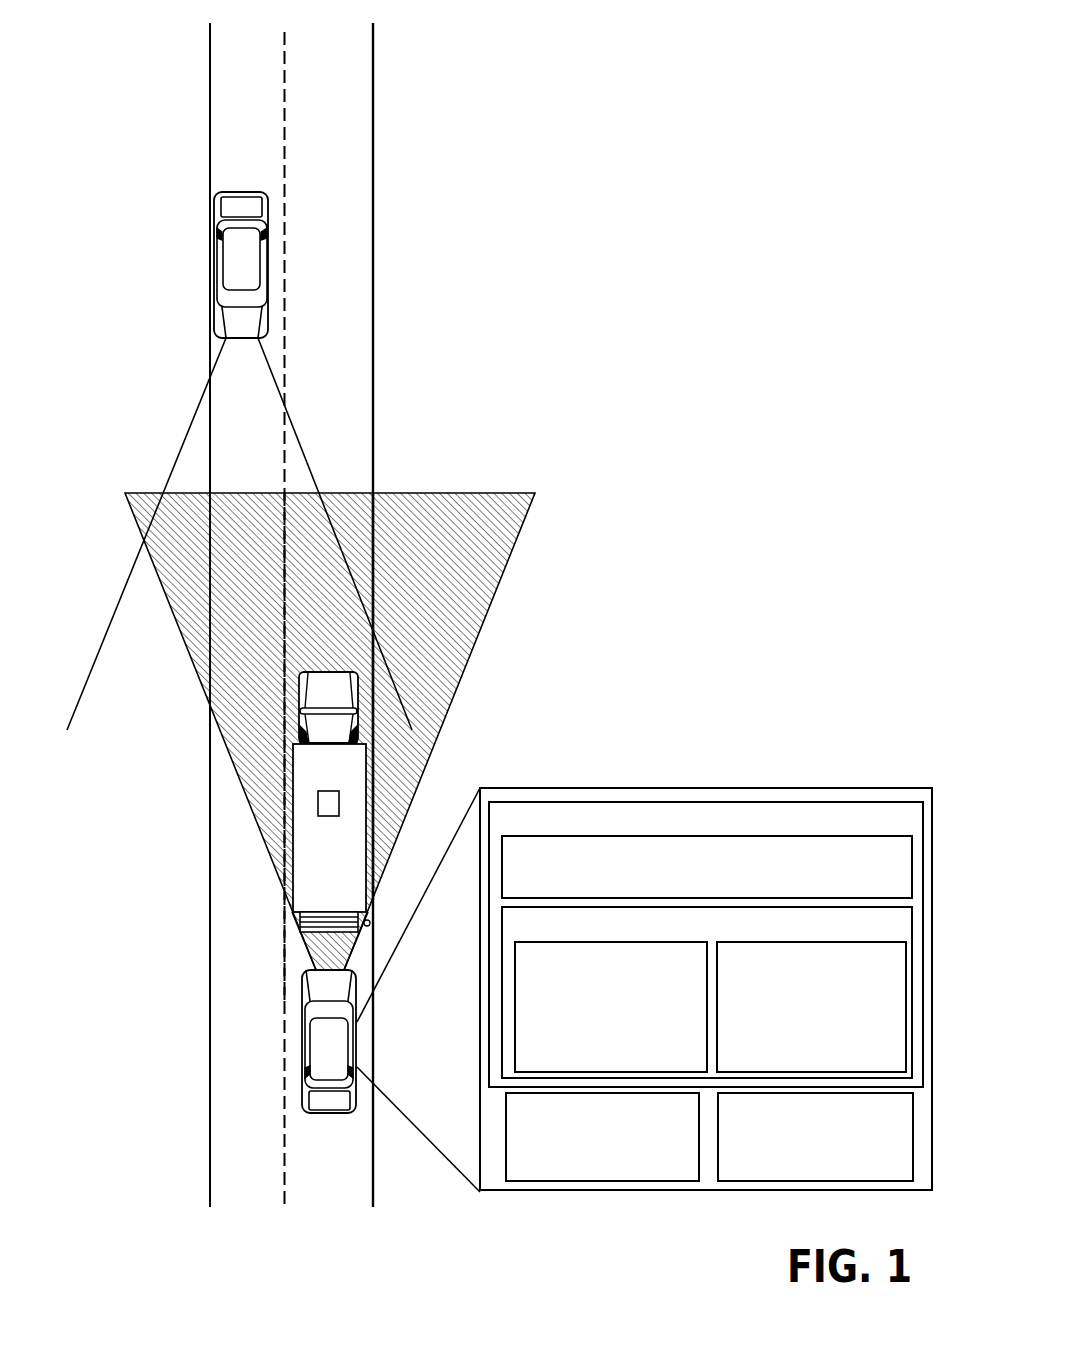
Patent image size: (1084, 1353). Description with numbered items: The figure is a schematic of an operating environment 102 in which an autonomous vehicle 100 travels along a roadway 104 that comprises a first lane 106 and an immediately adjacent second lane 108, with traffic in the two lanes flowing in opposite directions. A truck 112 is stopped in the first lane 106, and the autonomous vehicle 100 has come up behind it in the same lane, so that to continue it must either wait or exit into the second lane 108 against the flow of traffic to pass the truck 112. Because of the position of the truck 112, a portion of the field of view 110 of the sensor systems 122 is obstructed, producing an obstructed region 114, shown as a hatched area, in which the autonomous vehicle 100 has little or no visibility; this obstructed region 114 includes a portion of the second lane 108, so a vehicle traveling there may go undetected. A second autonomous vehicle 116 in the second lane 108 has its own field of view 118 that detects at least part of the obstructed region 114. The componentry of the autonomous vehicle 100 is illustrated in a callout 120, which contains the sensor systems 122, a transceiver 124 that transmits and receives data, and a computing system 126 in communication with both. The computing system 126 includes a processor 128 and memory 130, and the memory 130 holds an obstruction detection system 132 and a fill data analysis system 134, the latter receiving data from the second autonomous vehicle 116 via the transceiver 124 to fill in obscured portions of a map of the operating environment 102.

The autonomous vehicle 100 is at (300, 1027).
The operating environment 102 is at (461, 615).
The roadway 104 is at (193, 965).
The first lane 106 is at (330, 1185).
The second lane 108 is at (245, 1185).
The field of view 110 is at (300, 948).
The truck 112 is at (290, 780).
The obstructed region 114 is at (330, 749).
The second autonomous vehicle 116 is at (200, 265).
The field of view 118 is at (197, 405).
The callout 120 is at (602, 788).
The sensor systems 122 is at (602, 1137).
The transceiver 124 is at (815, 1137).
The computing system 126 is at (807, 802).
The processor 128 is at (707, 867).
The memory 130 is at (707, 992).
The obstruction detection system 132 is at (611, 1007).
The fill data analysis system 134 is at (811, 1007).